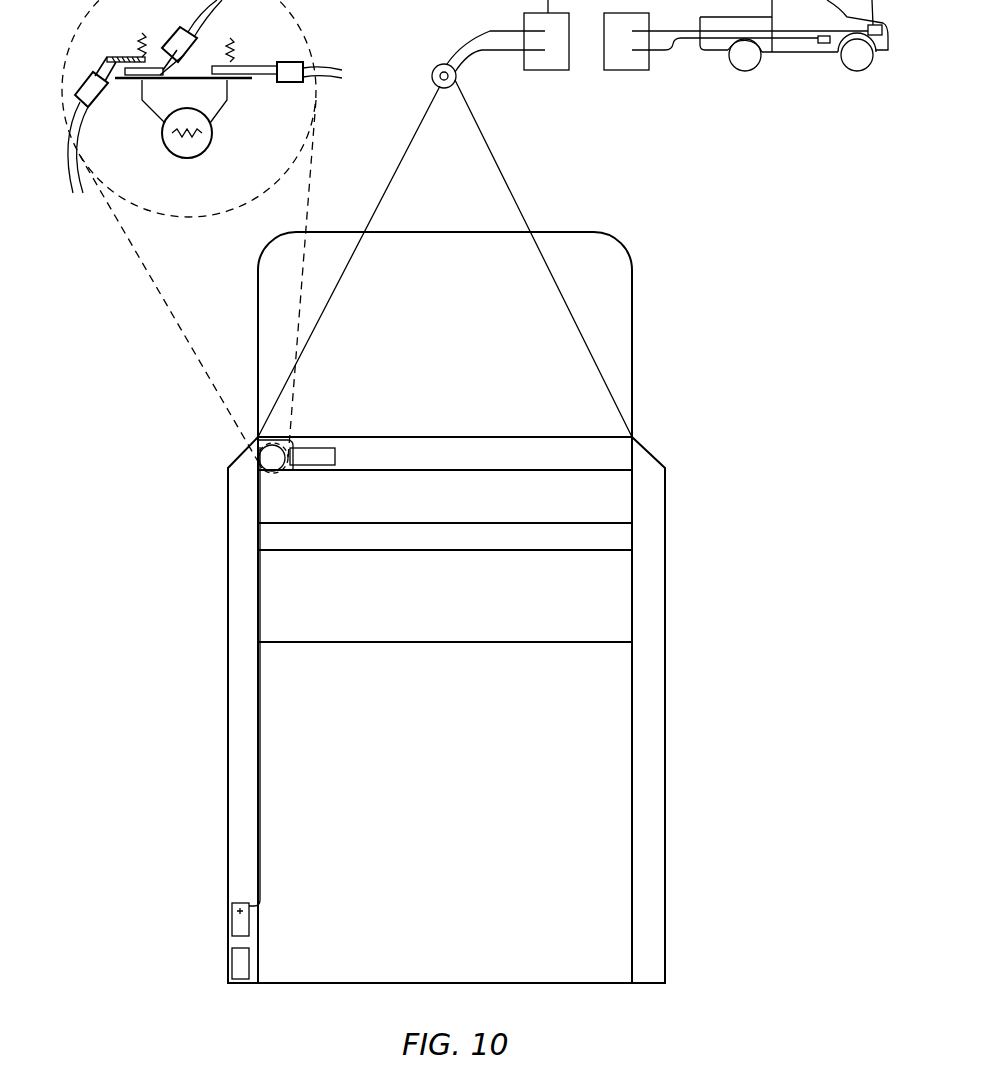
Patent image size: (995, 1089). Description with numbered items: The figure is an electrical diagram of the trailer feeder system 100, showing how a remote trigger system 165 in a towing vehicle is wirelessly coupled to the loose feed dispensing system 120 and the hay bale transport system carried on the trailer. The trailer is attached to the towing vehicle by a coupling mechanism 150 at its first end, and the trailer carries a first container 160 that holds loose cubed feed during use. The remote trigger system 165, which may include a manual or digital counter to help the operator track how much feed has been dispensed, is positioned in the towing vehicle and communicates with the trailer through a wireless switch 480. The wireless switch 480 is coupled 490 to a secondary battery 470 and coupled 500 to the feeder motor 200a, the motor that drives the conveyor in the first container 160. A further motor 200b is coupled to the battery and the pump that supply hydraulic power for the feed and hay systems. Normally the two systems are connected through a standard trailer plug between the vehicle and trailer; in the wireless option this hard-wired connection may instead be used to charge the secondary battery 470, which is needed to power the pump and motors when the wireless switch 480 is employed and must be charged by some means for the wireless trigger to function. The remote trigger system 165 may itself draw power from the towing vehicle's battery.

The trailer feeder system 100 is at (200, 605).
The loose feed dispensing system 120 is at (456, 511).
The coupling mechanism 150 is at (505, 176).
The first container 160 is at (456, 468).
The remote trigger system 165 is at (822, 45).
The feeder motor 200a is at (312, 459).
The motor 200b is at (232, 970).
The secondary battery 470 is at (232, 916).
The wireless switch 480 is at (187, 158).
The coupling to secondary battery 490 is at (98, 100).
The coupling to feeder motor 500 is at (243, 82).